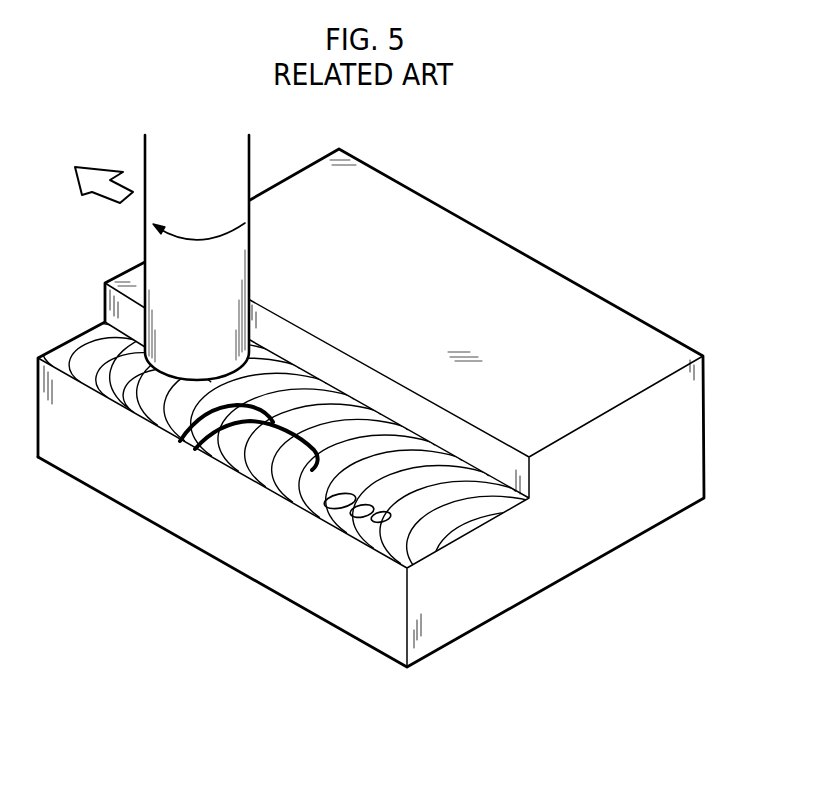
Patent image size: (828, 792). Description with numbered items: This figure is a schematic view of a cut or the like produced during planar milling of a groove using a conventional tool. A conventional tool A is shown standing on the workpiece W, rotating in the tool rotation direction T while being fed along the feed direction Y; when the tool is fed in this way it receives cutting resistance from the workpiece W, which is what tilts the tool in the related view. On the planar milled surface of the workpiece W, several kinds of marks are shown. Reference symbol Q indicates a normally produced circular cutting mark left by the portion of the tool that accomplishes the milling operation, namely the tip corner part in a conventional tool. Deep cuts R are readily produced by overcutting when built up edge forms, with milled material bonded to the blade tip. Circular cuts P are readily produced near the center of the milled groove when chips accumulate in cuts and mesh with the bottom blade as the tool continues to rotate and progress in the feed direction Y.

The workpiece W is at (458, 228).
The tool A is at (243, 160).
The tool rotation direction T is at (199, 224).
The feed direction Y is at (104, 172).
The circular cutting mark Q is at (126, 383).
The deep cuts R is at (238, 437).
The circular cuts P is at (348, 512).